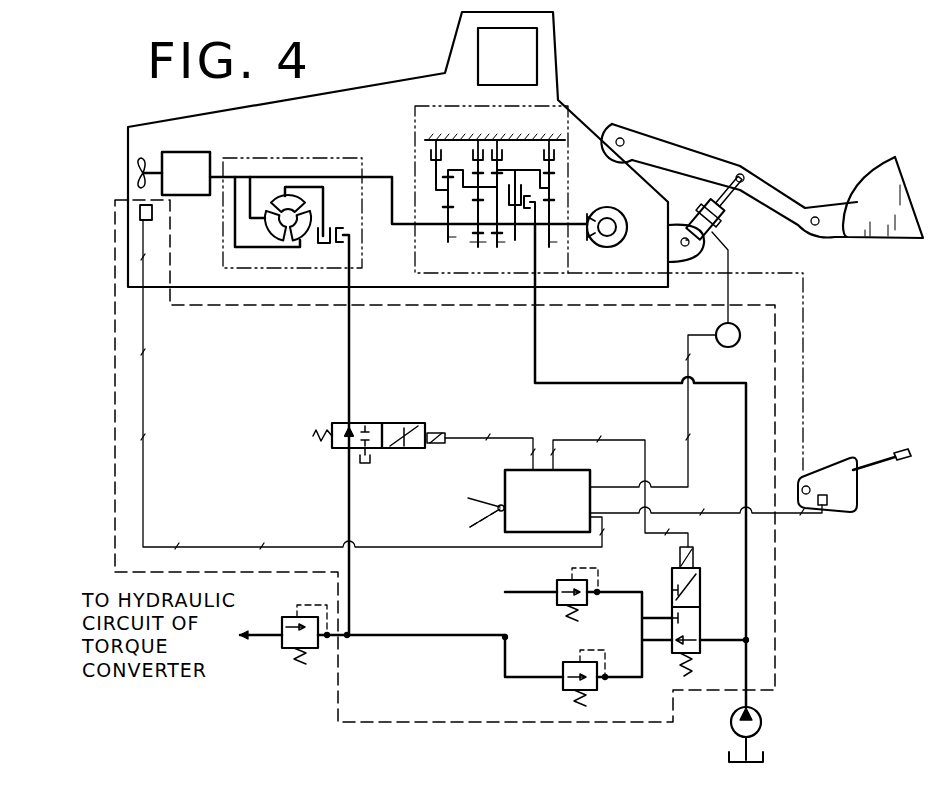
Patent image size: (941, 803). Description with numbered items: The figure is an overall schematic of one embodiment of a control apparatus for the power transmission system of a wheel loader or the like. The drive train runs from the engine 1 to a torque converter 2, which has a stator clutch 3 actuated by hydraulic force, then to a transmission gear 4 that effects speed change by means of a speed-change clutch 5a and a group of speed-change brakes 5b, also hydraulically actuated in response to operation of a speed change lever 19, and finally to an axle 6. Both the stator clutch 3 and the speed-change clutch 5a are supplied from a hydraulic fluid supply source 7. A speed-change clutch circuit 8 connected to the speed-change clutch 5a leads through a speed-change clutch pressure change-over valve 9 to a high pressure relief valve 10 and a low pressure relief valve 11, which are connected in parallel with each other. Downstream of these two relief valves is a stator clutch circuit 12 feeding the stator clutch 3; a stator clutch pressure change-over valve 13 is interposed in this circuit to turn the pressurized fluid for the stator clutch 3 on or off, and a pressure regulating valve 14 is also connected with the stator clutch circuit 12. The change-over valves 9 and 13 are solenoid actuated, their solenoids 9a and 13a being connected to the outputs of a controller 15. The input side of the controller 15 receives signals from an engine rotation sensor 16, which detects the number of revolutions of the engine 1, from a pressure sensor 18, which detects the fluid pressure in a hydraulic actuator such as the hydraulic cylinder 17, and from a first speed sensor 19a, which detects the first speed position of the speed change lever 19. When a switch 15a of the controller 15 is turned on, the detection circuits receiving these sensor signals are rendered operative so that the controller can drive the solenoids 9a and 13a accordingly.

The engine 1 is at (201, 152).
The torque converter 2 is at (281, 197).
The stator clutch 3 is at (333, 229).
The transmission gear 4 is at (415, 120).
The speed-change clutch 5a is at (510, 216).
The speed-change brakes 5b is at (565, 156).
The axle 6 is at (616, 238).
The hydraulic fluid supply source 7 is at (730, 723).
The speed-change clutch circuit 8 is at (746, 455).
The speed-change clutch pressure change-over valve 9 is at (700, 602).
The solenoid 9a is at (693, 557).
The high pressure relief valve 10 is at (563, 668).
The low pressure relief valve 11 is at (557, 585).
The stator clutch circuit 12 is at (350, 512).
The stator clutch pressure change-over valve 13 is at (398, 449).
The solenoid 13a is at (433, 432).
The pressure regulating valve 14 is at (284, 649).
The controller 15 is at (505, 531).
The switch 15a is at (480, 497).
The engine rotation sensor 16 is at (152, 213).
The hydraulic cylinder 17 is at (727, 222).
The pressure sensor 18 is at (734, 340).
The speed change lever 19 is at (876, 466).
The first speed sensor 19a is at (827, 506).